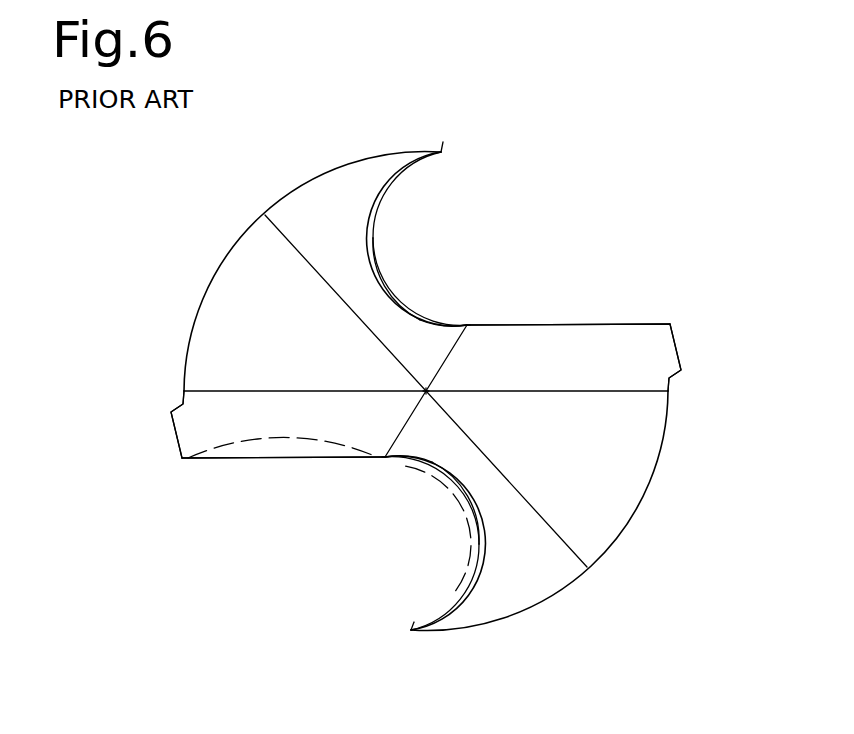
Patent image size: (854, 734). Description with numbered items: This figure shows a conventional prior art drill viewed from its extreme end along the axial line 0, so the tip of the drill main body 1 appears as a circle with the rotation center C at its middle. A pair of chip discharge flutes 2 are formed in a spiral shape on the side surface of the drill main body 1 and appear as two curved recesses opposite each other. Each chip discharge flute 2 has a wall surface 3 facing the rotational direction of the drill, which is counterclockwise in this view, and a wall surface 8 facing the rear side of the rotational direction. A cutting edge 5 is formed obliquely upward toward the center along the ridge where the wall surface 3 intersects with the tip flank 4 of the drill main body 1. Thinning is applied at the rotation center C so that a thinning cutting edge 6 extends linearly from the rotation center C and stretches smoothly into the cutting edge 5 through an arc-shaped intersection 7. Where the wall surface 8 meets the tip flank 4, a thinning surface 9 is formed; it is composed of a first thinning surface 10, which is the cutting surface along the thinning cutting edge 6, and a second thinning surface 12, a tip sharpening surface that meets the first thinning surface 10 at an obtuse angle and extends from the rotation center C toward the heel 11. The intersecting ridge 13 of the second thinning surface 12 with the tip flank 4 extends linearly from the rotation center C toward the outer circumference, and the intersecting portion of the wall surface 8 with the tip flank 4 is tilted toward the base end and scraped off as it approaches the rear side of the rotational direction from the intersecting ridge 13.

The drill main body 1 is at (222, 230).
The chip discharge flute 2 is at (522, 212).
The wall surface 3 is at (557, 314).
The tip flank 4 is at (648, 372).
The cutting edge 5 is at (606, 325).
The thinning cutting edge 6 is at (460, 330).
The arc-shaped intersection 7 is at (466, 326).
The wall surface 8 is at (382, 215).
The thinning surface 9 is at (448, 222).
The first thinning surface 10 is at (442, 363).
The heel 11 is at (443, 142).
The second thinning surface 12 is at (356, 243).
The intersecting ridge 13 is at (320, 280).
The rotation center C is at (418, 388).
The axial line 0 is at (432, 383).